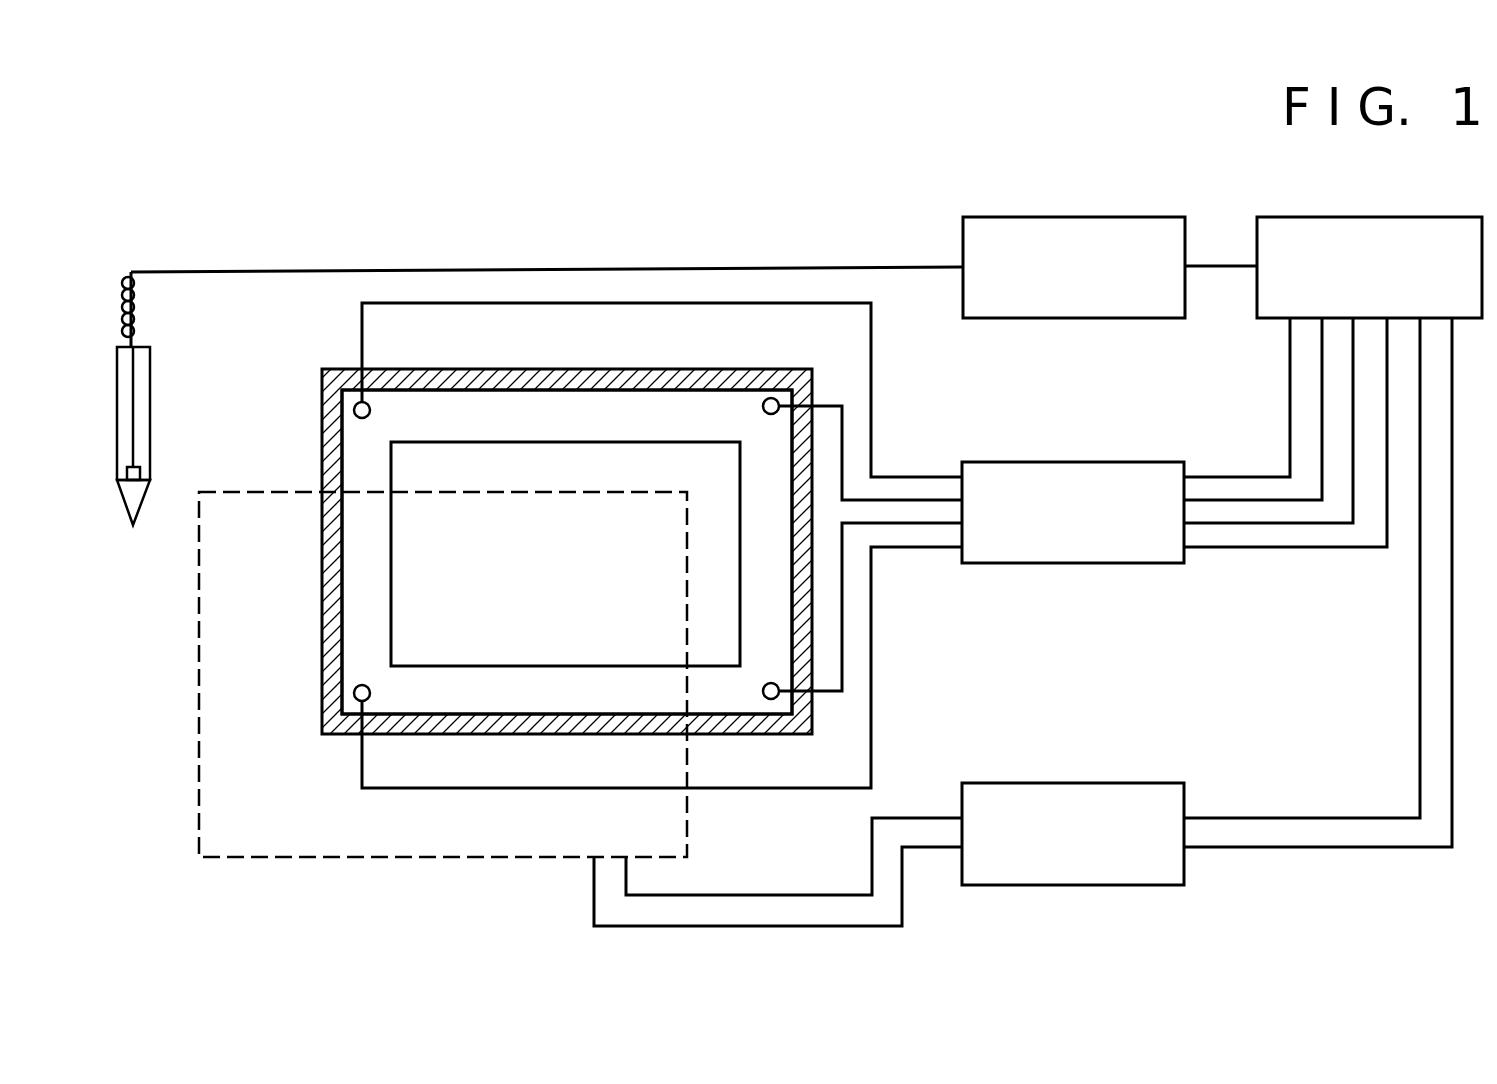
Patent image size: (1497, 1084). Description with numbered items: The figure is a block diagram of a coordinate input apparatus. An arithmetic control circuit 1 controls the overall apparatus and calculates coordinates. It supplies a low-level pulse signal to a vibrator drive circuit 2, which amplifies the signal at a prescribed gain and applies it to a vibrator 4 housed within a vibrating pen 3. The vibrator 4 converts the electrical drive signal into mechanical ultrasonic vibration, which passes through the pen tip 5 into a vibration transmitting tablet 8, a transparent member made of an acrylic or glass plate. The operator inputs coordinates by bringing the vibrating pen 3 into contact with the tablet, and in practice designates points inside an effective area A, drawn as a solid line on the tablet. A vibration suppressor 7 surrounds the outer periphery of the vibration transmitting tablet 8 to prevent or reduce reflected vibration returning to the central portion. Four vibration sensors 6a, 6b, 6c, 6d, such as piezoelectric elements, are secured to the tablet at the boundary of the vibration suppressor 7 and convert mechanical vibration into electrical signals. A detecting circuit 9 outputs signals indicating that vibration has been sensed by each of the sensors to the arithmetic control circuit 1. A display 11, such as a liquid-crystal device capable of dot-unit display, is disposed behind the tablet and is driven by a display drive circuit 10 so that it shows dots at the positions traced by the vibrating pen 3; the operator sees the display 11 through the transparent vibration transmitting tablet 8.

The arithmetic control circuit 1 is at (1428, 216).
The vibrator drive circuit 2 is at (1124, 216).
The vibrating pen 3 is at (150, 400).
The vibrator 4 is at (148, 471).
The pen tip 5 is at (138, 510).
The vibration sensor 6a is at (371, 413).
The vibration sensor 6b is at (762, 408).
The vibration sensor 6c is at (371, 693).
The vibration sensor 6d is at (762, 691).
The vibration suppressor 7 is at (650, 371).
The vibration transmitting tablet 8 is at (512, 410).
The detecting circuit 9 is at (1130, 461).
The display drive circuit 10 is at (1120, 782).
The display 11 is at (485, 858).
The effective area A is at (555, 668).